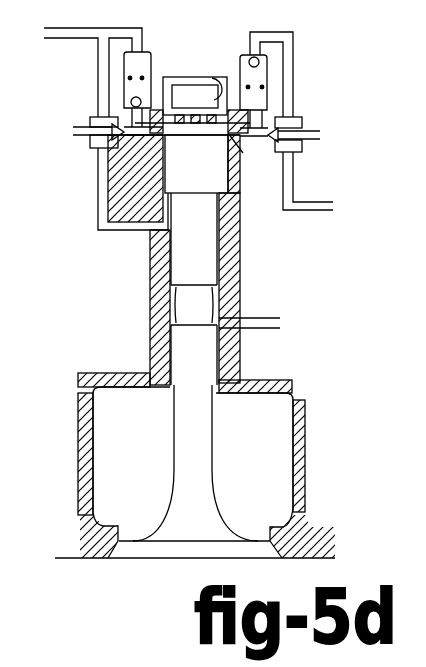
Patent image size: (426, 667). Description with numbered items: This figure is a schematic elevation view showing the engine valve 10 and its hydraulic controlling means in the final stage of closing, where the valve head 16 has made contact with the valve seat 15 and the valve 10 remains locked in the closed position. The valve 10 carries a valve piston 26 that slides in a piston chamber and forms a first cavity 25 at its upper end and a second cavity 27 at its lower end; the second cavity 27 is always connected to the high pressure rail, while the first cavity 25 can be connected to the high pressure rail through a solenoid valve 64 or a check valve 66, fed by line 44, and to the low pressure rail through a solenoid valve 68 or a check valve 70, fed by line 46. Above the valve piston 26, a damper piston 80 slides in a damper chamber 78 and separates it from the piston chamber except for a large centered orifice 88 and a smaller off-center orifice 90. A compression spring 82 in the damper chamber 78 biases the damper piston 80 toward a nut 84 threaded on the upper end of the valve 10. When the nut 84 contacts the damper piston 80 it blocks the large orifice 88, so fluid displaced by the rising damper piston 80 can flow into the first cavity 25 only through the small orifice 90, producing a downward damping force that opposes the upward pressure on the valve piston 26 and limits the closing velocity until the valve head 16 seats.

The valve 10 is at (229, 474).
The valve seat 15 is at (112, 560).
The valve head 16 is at (160, 560).
The first cavity 25 is at (137, 136).
The valve piston 26 is at (212, 179).
The second cavity 27 is at (162, 233).
The line 44 is at (69, 29).
The line 46 is at (321, 214).
The solenoid valve 64 is at (73, 127).
The check valve 66 is at (144, 50).
The solenoid valve 68 is at (320, 135).
The check valve 70 is at (262, 72).
The damper chamber 78 is at (183, 78).
The damper piston 80 is at (157, 108).
The compression spring 82 is at (205, 86).
The nut 84 is at (205, 133).
The large centered orifice 88 is at (172, 134).
The small off-center orifice 90 is at (165, 138).